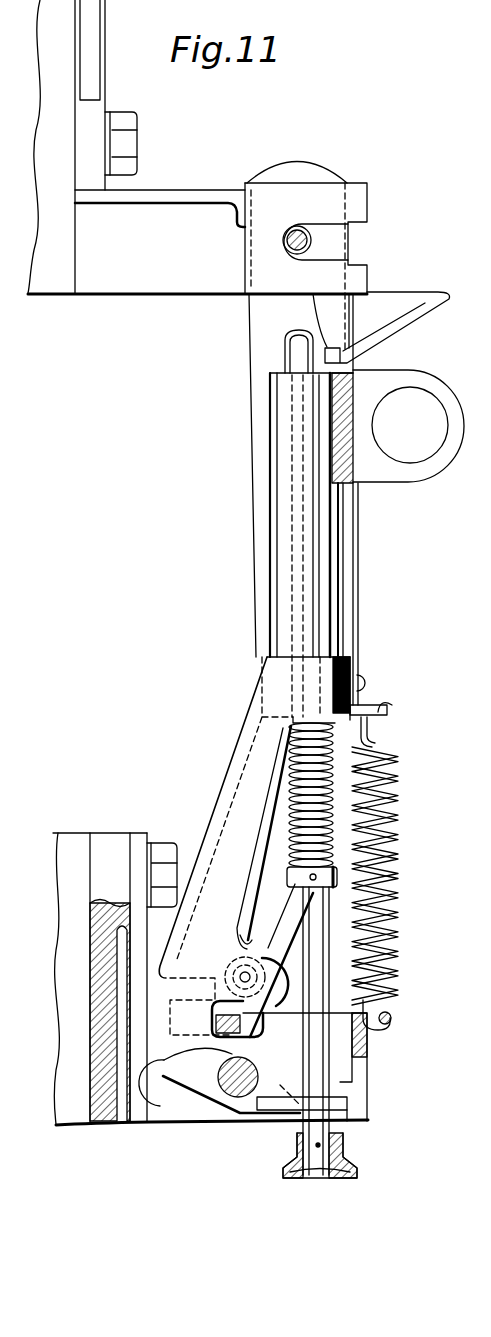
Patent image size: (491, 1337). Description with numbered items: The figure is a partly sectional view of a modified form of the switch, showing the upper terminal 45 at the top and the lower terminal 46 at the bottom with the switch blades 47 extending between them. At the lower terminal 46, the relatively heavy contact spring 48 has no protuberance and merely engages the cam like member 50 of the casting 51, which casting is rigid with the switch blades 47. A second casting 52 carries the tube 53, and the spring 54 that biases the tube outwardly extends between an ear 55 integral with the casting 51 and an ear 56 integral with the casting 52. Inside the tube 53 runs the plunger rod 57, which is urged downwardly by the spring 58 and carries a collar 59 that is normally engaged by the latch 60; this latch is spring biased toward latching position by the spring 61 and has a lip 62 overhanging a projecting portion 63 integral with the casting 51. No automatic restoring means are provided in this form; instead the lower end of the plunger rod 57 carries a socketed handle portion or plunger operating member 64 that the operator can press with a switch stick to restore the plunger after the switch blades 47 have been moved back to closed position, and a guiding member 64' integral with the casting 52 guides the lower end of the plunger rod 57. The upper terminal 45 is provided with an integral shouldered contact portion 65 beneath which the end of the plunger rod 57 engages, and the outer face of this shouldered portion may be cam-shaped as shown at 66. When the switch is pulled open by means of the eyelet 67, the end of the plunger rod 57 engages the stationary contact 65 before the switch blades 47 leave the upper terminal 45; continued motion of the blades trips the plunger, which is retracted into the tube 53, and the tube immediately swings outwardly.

The upper terminal 45 is at (175, 190).
The lower terminal 46 is at (108, 831).
The switch blades 47 is at (363, 586).
The contact spring 48 is at (137, 1119).
The cam like member 50 is at (170, 1110).
The casting 51 is at (370, 1088).
The casting 52 is at (232, 760).
The tube 53 is at (271, 572).
The spring 54 is at (397, 870).
The ear 55 is at (400, 1005).
The ear 56 is at (370, 702).
The plunger rod 57 is at (313, 987).
The spring 58 is at (288, 808).
The collar 59 is at (283, 872).
The latch 60 is at (280, 893).
The spring 61 is at (250, 925).
The lip 62 is at (262, 1022).
The projecting portion 63 is at (228, 1030).
The plunger operating member 64 is at (292, 1040).
The guiding member 64' is at (326, 1122).
The shouldered contact portion 65 is at (327, 309).
The cam-shaped outer face 66 is at (422, 318).
The eyelet 67 is at (415, 474).